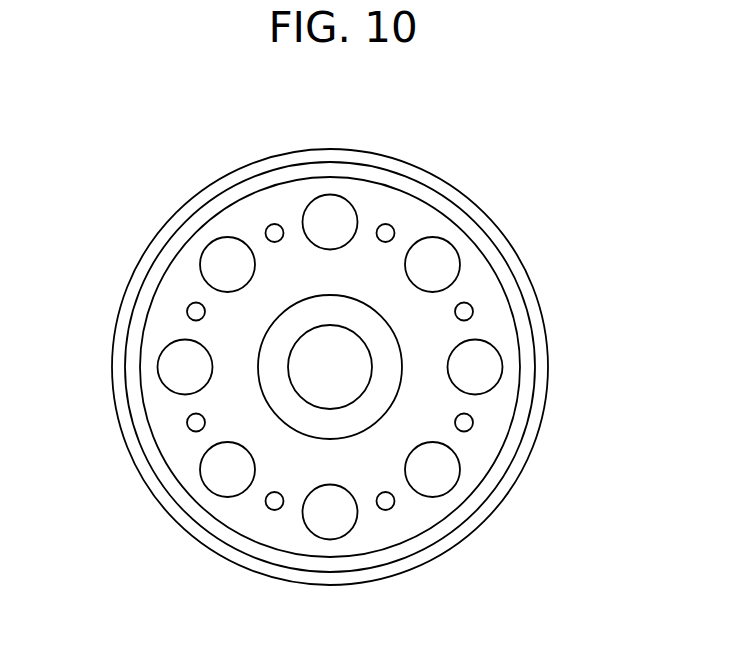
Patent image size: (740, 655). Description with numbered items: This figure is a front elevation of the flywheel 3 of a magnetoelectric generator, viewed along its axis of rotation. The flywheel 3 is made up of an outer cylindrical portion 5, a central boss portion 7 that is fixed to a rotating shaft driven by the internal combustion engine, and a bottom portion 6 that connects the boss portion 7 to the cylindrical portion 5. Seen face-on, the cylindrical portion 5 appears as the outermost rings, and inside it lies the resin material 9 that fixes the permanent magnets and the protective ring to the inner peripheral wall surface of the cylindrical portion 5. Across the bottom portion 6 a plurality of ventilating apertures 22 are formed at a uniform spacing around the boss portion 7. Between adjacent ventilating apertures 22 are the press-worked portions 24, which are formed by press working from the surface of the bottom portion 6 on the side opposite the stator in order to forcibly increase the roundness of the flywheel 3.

The flywheel 3 is at (497, 227).
The cylindrical portion 5 is at (288, 152).
The bottom portion 6 is at (180, 443).
The boss portion 7 is at (378, 392).
The resin material 9 is at (169, 252).
The ventilating apertures 22 is at (208, 248).
The press-worked portions 24 is at (474, 313).